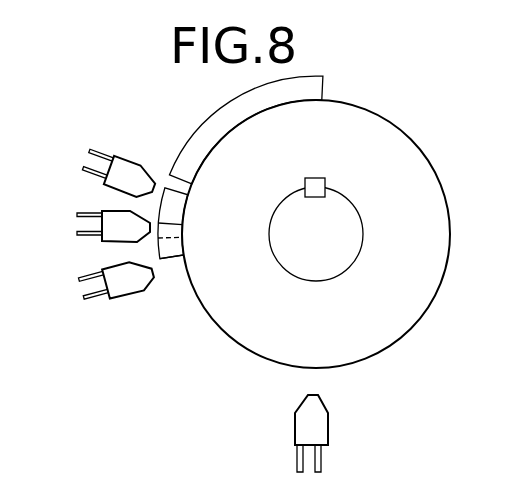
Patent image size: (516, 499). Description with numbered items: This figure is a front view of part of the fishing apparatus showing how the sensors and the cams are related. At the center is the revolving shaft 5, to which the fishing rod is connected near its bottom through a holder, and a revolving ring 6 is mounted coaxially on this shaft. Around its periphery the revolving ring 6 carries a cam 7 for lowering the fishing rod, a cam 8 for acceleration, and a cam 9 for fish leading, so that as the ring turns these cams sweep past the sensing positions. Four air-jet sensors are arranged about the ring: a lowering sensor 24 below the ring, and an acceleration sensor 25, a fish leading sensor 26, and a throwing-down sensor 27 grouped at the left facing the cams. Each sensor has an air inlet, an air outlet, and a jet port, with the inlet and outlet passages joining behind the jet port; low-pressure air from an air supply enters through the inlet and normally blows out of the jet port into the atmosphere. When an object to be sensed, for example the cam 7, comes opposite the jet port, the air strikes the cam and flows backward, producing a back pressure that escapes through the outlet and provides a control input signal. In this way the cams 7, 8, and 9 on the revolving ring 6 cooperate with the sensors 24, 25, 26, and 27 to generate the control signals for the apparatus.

The revolving shaft 5 is at (343, 213).
The revolving ring 6 is at (432, 193).
The cam for lowering the fishing rod 7 is at (165, 185).
The cam for acceleration 8 is at (210, 125).
The cam for fish leading 9 is at (167, 256).
The lowering sensor 24 is at (322, 407).
The acceleration sensor 25 is at (136, 176).
The fish leading sensor 26 is at (132, 283).
The throwing-down sensor 27 is at (114, 233).